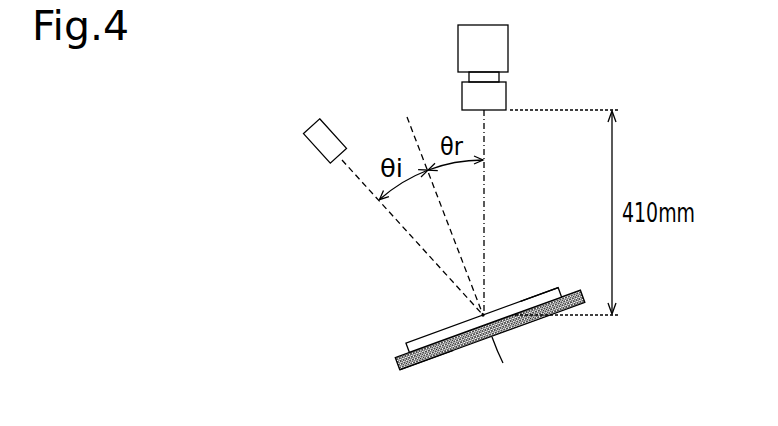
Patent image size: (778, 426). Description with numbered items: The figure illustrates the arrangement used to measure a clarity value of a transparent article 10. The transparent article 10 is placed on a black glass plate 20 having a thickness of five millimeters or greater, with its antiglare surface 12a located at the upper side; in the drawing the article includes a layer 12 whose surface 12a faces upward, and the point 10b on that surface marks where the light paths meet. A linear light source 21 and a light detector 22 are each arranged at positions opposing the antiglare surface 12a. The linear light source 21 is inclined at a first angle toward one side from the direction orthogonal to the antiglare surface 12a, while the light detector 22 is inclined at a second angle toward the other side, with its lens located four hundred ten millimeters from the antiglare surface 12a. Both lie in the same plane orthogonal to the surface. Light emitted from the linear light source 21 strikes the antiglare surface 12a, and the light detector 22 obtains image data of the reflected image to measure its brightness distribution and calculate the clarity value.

The transparent article 10 is at (410, 347).
The measurement point 10b is at (480, 315).
The glass plate 12 is at (530, 323).
The antiglare surface 12a is at (545, 288).
The black glass plate 20 is at (419, 363).
The linear light source 21 is at (315, 148).
The light detector 22 is at (508, 46).